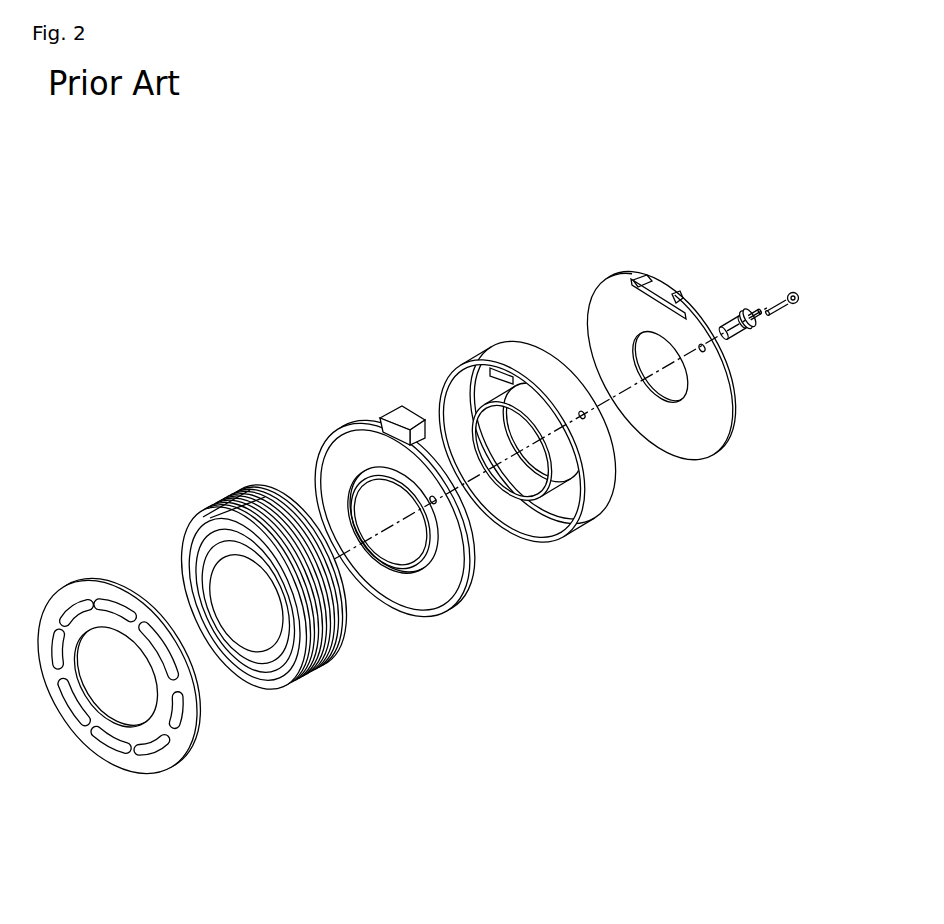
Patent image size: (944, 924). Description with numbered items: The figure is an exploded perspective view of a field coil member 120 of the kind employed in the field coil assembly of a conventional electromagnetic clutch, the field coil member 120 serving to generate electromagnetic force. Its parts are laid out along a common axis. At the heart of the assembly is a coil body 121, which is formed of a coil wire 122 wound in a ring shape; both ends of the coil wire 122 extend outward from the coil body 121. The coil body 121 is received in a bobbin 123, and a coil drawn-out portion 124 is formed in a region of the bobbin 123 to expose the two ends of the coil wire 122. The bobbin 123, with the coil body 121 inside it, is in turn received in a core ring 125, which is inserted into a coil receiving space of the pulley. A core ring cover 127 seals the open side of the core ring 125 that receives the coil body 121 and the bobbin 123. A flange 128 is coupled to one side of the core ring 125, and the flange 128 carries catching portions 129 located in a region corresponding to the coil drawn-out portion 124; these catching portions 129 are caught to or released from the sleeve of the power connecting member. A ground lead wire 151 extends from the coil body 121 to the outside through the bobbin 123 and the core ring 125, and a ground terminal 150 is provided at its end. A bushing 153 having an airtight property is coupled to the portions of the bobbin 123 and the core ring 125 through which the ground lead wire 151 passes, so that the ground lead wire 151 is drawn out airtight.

The field coil member 120 is at (231, 346).
The coil body 121 is at (333, 657).
The coil wire 122 is at (263, 498).
The bobbin 123 is at (463, 578).
The coil drawn-out portion 124 is at (399, 409).
The core ring 125 is at (600, 495).
The core ring cover 127 is at (190, 732).
The flange 128 is at (707, 430).
The catching portions 129 is at (675, 293).
The ground terminal 150 is at (791, 294).
The ground lead wire 151 is at (343, 560).
The bushing 153 is at (742, 338).